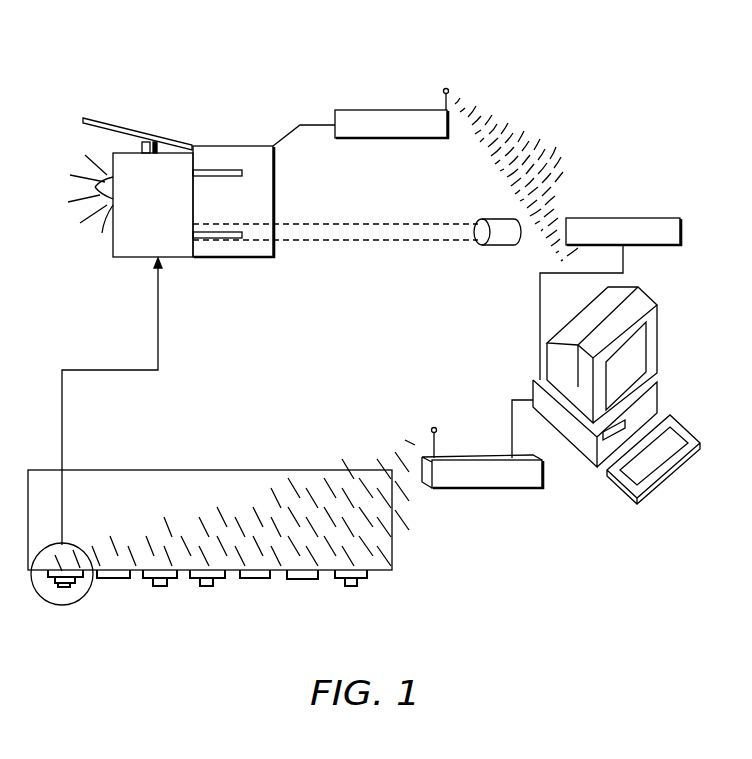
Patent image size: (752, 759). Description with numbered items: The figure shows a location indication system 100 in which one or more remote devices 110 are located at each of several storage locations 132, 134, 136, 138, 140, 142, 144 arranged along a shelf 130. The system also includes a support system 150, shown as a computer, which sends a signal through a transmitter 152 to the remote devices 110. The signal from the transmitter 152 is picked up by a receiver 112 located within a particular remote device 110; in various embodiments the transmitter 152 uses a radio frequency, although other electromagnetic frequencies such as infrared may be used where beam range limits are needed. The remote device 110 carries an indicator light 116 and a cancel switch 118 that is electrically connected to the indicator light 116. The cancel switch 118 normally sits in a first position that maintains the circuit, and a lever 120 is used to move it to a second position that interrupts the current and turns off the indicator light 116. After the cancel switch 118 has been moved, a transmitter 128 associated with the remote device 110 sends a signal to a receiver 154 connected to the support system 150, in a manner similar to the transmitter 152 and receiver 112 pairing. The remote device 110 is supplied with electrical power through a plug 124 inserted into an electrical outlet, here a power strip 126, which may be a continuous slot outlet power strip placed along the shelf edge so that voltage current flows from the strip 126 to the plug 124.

The location indication system 100 is at (513, 61).
The remote device 110 is at (173, 258).
The receiver 112 is at (497, 217).
The indicator light 116 is at (90, 208).
The cancel switch 118 is at (142, 146).
The lever 120 is at (105, 121).
The plug 124 is at (207, 170).
The power strip 126 is at (275, 193).
The transmitter 128 is at (347, 138).
The shelf 130 is at (153, 470).
The storage location 132 is at (63, 588).
The storage location 134 is at (120, 582).
The storage location 136 is at (150, 588).
The storage location 138 is at (208, 587).
The storage location 140 is at (245, 578).
The storage location 142 is at (297, 580).
The storage location 144 is at (348, 587).
The support system 150 is at (643, 292).
The transmitter 152 is at (458, 488).
The receiver 154 is at (640, 218).